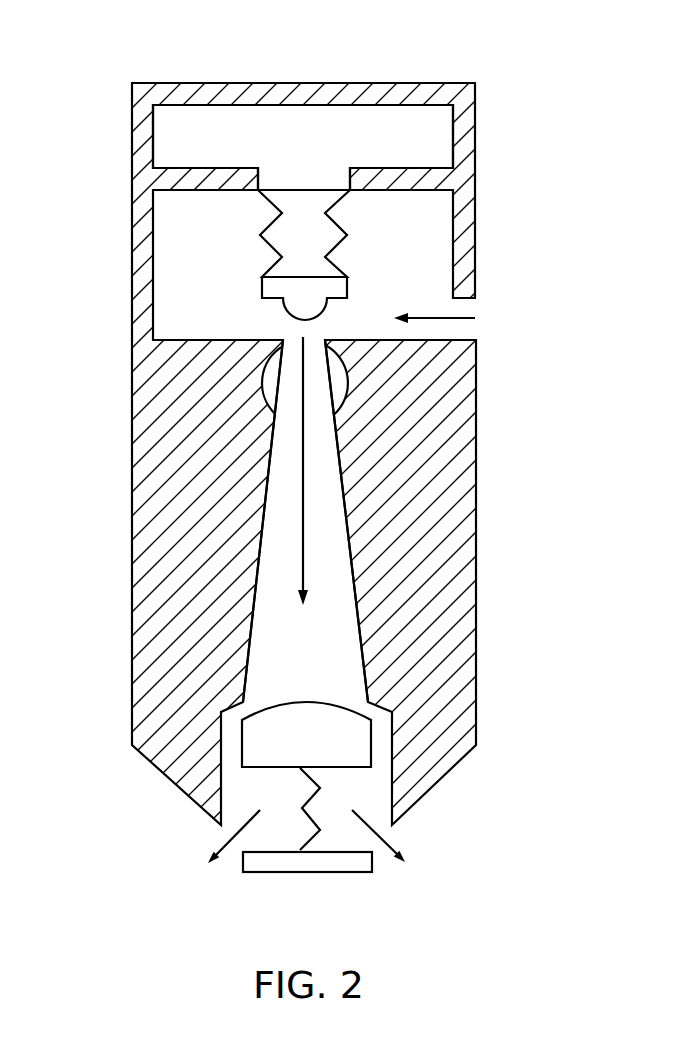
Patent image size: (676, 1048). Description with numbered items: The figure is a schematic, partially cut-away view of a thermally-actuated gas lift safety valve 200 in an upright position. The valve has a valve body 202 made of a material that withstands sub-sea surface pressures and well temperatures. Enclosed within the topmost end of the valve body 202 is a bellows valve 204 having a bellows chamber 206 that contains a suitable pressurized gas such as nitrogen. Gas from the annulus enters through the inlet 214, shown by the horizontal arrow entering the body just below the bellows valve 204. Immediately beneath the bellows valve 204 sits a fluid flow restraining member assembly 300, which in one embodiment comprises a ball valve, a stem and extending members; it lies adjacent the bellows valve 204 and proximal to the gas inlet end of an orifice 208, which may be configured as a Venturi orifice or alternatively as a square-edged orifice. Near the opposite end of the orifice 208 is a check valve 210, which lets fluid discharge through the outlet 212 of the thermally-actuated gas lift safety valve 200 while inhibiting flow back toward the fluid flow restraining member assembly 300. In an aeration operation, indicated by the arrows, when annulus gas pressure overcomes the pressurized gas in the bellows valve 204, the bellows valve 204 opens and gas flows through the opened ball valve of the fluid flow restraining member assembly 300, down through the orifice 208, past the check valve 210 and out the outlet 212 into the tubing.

The thermally-actuated gas lift safety valve 200 is at (89, 59).
The valve body 202 is at (132, 220).
The bellows valve 204 is at (262, 287).
The bellows chamber 206 is at (308, 125).
The orifice 208 is at (275, 568).
The check valve 210 is at (242, 736).
The outlet 212 is at (370, 842).
The inlet 214 is at (472, 329).
The fluid flow restraining member assembly 300 is at (262, 380).